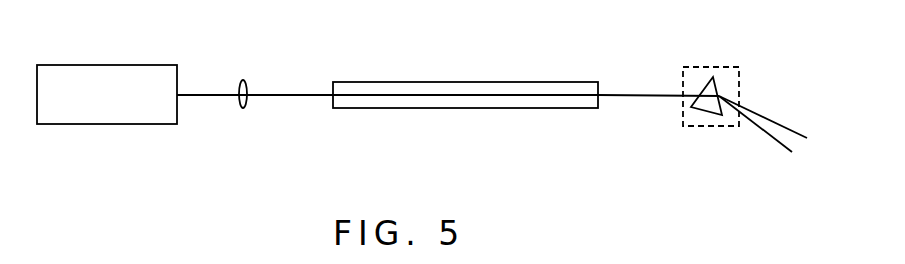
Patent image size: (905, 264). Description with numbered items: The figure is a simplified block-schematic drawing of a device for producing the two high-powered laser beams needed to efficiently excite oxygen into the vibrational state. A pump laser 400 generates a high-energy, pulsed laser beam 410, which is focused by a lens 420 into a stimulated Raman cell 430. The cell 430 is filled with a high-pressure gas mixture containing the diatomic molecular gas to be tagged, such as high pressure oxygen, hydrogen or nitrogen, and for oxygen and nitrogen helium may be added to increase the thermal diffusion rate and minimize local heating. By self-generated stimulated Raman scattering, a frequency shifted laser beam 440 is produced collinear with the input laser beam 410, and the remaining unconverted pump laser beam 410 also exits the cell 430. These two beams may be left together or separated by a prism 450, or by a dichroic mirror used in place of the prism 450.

The pump laser 400 is at (83, 124).
The pulsed laser beam 410 is at (202, 95).
The lens 420 is at (243, 108).
The stimulated Raman cell 430 is at (362, 82).
The frequency shifted laser beam 440 is at (623, 94).
The prism 450 is at (732, 66).